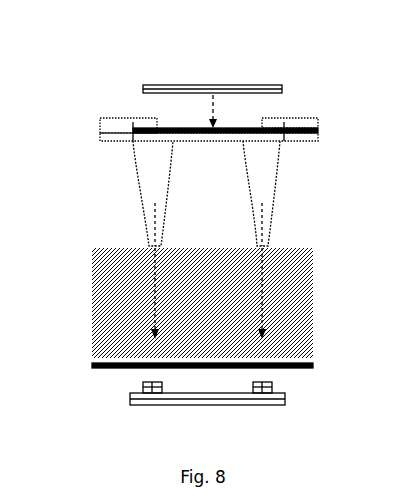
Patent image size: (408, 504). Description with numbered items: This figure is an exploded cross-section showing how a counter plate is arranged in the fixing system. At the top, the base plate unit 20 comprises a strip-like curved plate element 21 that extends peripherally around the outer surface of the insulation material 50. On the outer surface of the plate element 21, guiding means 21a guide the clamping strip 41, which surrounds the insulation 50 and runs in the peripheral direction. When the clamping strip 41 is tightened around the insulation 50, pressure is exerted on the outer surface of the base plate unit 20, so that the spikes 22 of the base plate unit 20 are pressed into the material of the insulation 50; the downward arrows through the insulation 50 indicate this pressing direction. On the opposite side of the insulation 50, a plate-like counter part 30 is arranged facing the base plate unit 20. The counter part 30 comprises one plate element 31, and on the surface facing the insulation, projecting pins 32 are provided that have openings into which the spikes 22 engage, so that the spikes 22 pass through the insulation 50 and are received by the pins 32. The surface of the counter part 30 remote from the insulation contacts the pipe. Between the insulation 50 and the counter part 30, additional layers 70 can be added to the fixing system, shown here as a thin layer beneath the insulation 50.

The base plate unit 20 is at (107, 117).
The plate element 21 is at (100, 138).
The guiding means 21a is at (279, 118).
The spikes 22 is at (263, 173).
The counter part 30 is at (173, 403).
The plate element 31 is at (130, 400).
The projecting pins 32 is at (272, 383).
The clamping strip 41 is at (226, 85).
The insulation material 50 is at (298, 312).
The additional layers 70 is at (92, 366).